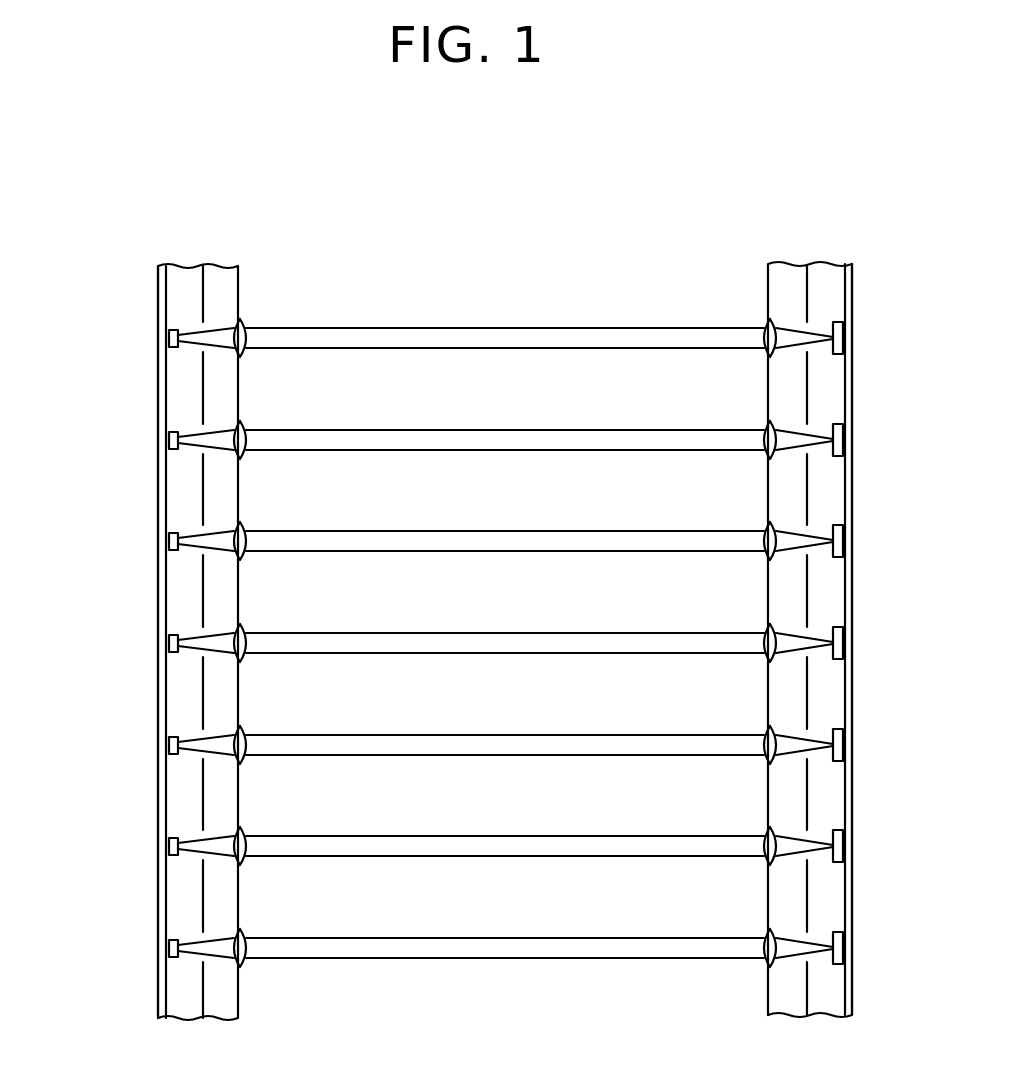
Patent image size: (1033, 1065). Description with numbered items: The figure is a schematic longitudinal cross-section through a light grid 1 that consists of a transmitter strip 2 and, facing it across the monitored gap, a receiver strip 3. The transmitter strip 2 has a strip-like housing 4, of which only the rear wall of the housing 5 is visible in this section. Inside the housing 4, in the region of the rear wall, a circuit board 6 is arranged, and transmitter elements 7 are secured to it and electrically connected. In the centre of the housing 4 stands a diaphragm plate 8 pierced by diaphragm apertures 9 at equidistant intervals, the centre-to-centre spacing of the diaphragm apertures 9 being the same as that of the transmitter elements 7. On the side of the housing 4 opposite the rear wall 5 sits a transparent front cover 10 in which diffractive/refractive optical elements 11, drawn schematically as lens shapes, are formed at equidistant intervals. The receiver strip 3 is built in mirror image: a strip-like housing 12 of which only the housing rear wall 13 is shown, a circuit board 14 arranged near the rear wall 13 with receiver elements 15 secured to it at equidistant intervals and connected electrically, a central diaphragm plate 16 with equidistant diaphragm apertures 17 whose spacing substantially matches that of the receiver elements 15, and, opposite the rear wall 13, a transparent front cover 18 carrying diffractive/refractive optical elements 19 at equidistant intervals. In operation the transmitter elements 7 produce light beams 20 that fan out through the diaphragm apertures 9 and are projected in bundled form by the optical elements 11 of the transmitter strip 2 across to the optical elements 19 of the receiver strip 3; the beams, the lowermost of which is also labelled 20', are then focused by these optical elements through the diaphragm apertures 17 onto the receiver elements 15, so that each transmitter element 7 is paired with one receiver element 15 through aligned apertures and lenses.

The light grid 1 is at (383, 212).
The transmitter strip 2 is at (125, 305).
The receiver strip 3 is at (887, 307).
The strip-like housing 4 is at (146, 397).
The rear wall of the housing 5 is at (158, 495).
The circuit board 6 is at (166, 572).
The transmitter elements 7 is at (165, 643).
The diaphragm plate 8 is at (203, 690).
The diaphragm apertures 9 is at (205, 741).
The transparent front cover 10 is at (238, 282).
The diffractive/refractive optical elements 11 is at (236, 851).
The strip-like housing 12 is at (864, 407).
The housing rear wall 13 is at (853, 450).
The circuit board 14 is at (848, 497).
The receiver elements 15 is at (843, 548).
The diaphragm plate 16 is at (807, 683).
The diaphragm apertures 17 is at (818, 745).
The transparent front cover 18 is at (768, 283).
The diffractive/refractive optical elements 19 is at (778, 870).
The light beams 20 is at (170, 970).
The light beam 20' is at (505, 981).